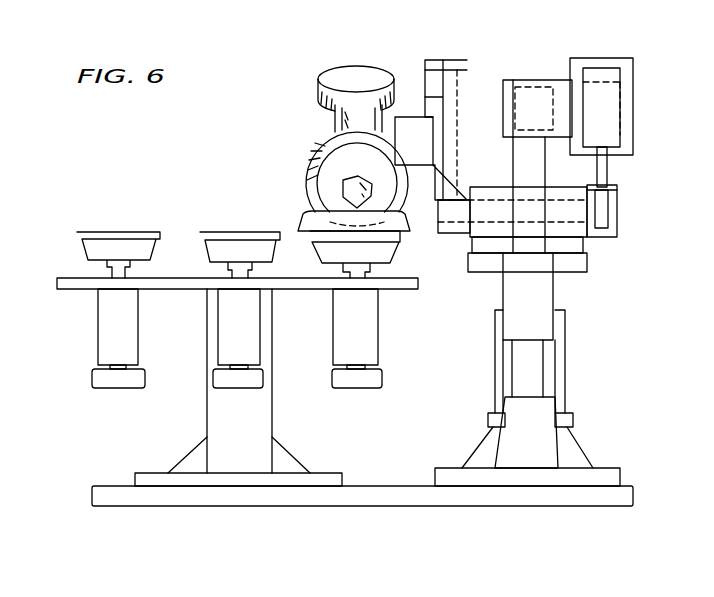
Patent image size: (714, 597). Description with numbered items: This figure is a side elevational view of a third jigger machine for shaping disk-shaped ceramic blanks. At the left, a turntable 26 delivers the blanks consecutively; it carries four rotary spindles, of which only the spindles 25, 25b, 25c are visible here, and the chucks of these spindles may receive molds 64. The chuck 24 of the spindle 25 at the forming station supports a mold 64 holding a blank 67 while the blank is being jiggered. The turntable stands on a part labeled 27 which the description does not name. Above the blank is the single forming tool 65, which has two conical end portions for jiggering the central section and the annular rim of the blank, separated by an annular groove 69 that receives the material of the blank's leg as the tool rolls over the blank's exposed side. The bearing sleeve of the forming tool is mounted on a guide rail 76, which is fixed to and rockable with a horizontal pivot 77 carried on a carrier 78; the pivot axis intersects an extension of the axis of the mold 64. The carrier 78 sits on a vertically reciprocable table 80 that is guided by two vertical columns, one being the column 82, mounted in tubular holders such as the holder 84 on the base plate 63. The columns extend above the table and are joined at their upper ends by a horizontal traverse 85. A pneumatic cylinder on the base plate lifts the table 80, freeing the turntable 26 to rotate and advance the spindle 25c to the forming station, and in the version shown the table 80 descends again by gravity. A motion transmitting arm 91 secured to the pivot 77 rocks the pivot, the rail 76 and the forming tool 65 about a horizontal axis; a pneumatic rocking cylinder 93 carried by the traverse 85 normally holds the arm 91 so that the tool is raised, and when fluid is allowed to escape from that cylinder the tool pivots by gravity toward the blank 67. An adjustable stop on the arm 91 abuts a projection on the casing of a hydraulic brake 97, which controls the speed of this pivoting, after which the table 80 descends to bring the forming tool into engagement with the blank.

The chuck 24 is at (387, 252).
The rotary spindle 25 is at (375, 323).
The rotary spindle 25b is at (108, 318).
The rotary spindle 25c is at (227, 310).
The turntable 26 is at (68, 278).
The column 27 is at (215, 402).
The base plate 63 is at (382, 495).
The mold 64 is at (303, 213).
The forming tool 65 is at (396, 135).
The blank 67 is at (308, 207).
The annular groove 69 is at (330, 173).
The guide rail 76 is at (458, 78).
The horizontal pivot 77 is at (620, 207).
The carrier 78 is at (492, 197).
The vertically reciprocable table 80 is at (543, 288).
The vertical column 82 is at (533, 367).
The tubular holder 84 is at (537, 417).
The horizontal traverse 85 is at (505, 87).
The motion transmitting arm 91 is at (608, 212).
The pneumatic rocking cylinder 93 is at (622, 157).
The hydraulic brake 97 is at (607, 116).